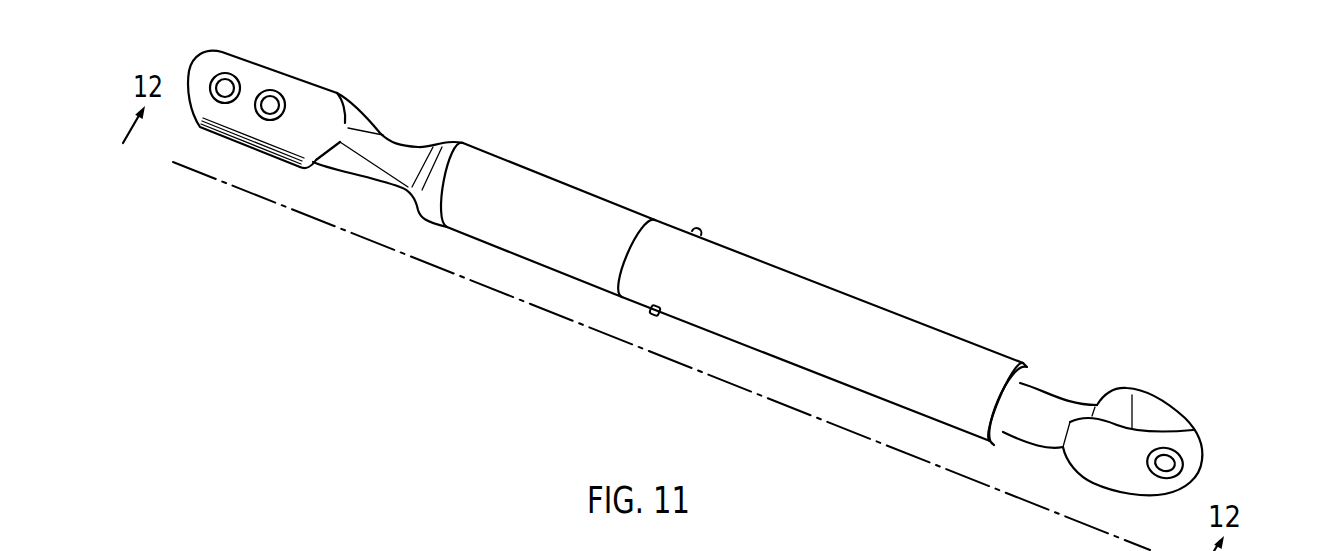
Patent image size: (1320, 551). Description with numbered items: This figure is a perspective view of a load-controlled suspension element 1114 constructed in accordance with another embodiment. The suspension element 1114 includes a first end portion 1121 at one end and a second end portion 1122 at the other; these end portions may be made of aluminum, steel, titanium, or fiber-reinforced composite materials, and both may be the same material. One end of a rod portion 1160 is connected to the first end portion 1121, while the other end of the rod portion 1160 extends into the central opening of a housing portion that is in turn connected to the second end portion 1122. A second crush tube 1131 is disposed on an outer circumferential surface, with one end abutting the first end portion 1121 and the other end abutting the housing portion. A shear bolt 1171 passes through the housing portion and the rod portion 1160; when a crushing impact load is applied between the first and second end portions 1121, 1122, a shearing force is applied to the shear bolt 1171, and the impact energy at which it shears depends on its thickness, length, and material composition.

The suspension element 1114 is at (987, 246).
The first end portion 1121 is at (295, 92).
The second end portion 1122 is at (1168, 417).
The second crush tube 1131 is at (550, 195).
The rod portion 1160 is at (868, 323).
The shear bolt 1171 is at (695, 229).